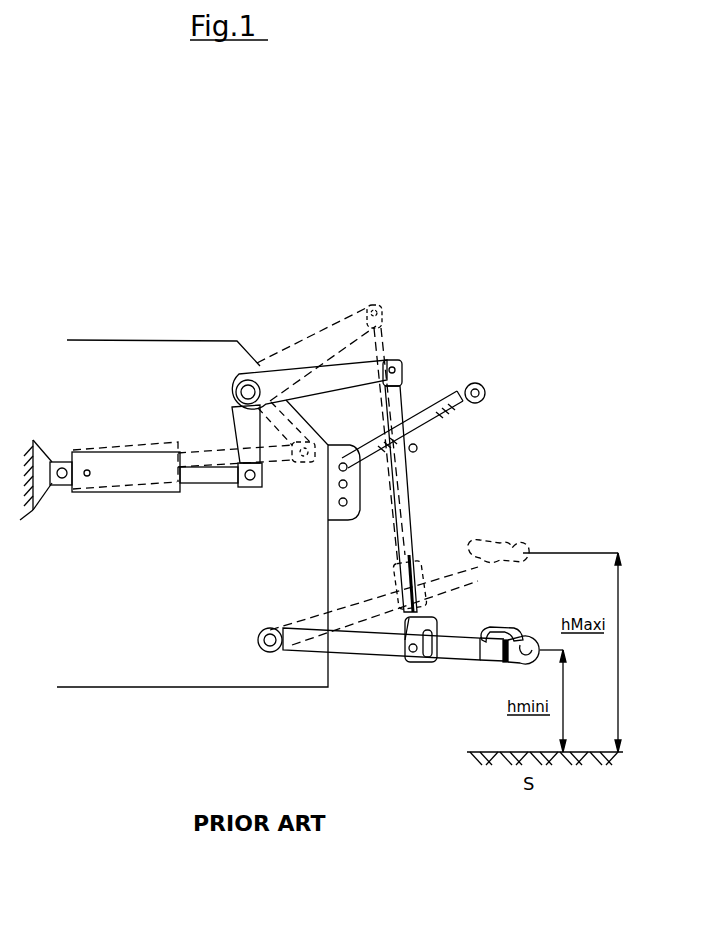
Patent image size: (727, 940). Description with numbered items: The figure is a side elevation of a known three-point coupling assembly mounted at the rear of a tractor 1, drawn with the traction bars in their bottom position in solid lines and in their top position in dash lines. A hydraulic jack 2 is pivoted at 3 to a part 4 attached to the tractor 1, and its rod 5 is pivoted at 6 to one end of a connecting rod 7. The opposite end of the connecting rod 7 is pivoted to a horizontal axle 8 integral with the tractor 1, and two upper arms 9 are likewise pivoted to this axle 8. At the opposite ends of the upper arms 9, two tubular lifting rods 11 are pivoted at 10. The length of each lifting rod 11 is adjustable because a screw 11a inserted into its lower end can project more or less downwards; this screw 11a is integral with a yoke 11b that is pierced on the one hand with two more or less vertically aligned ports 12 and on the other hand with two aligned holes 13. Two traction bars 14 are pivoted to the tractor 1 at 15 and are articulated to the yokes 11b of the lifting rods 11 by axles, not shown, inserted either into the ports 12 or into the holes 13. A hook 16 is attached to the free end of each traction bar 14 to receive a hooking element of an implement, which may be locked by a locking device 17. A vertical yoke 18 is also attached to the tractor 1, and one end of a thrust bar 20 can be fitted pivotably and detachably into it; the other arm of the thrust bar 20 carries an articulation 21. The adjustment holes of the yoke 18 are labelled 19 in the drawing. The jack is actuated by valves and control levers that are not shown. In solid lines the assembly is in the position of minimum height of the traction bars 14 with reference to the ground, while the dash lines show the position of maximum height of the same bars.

The tractor 1 is at (192, 513).
The hydraulic jack 2 is at (113, 477).
The pivot 3 is at (58, 485).
The part 4 is at (38, 455).
The rod 5 is at (208, 480).
The pivot 6 is at (250, 486).
The connecting rod 7 is at (242, 430).
The horizontal axle 8 is at (236, 391).
The upper arms 9 is at (326, 377).
The pivot 10 is at (394, 361).
The tubular lifting rods 11 is at (406, 503).
The screw 11a is at (388, 608).
The yoke 11b is at (406, 645).
The ports 12 is at (427, 628).
The holes 13 is at (416, 652).
The traction bars 14 is at (357, 645).
The pivot 15 is at (258, 644).
The hook 16 is at (522, 657).
The locking device 17 is at (503, 630).
The vertical yoke 18 is at (340, 518).
The adjustment holes 19 is at (340, 503).
The thrust bar 20 is at (423, 410).
The articulation 21 is at (488, 398).